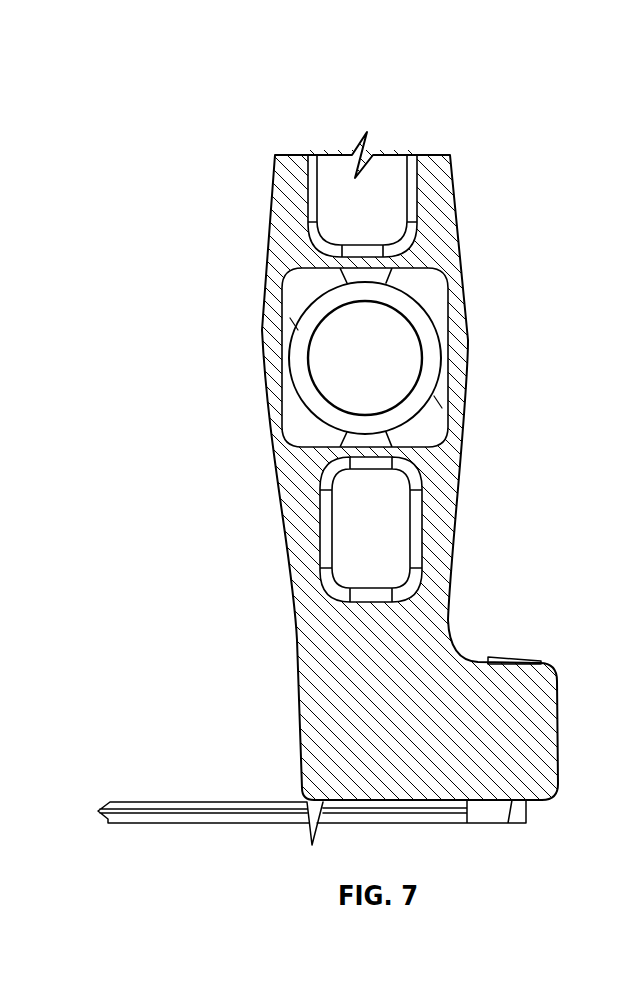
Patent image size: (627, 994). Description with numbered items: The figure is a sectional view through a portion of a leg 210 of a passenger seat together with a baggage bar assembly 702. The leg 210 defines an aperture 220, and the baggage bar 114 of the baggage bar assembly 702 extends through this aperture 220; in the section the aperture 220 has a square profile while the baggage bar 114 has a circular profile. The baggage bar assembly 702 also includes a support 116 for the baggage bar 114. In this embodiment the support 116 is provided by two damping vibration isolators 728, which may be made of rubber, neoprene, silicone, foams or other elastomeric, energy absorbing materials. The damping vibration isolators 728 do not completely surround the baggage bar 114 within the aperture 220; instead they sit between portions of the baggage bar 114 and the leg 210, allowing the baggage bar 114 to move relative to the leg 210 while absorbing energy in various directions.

The baggage bar assembly 702 is at (231, 128).
The leg 210 is at (430, 220).
The aperture 220 is at (465, 315).
The damping vibration isolator 728 is at (290, 318).
The baggage bar 114 is at (305, 338).
The support 116 is at (420, 418).